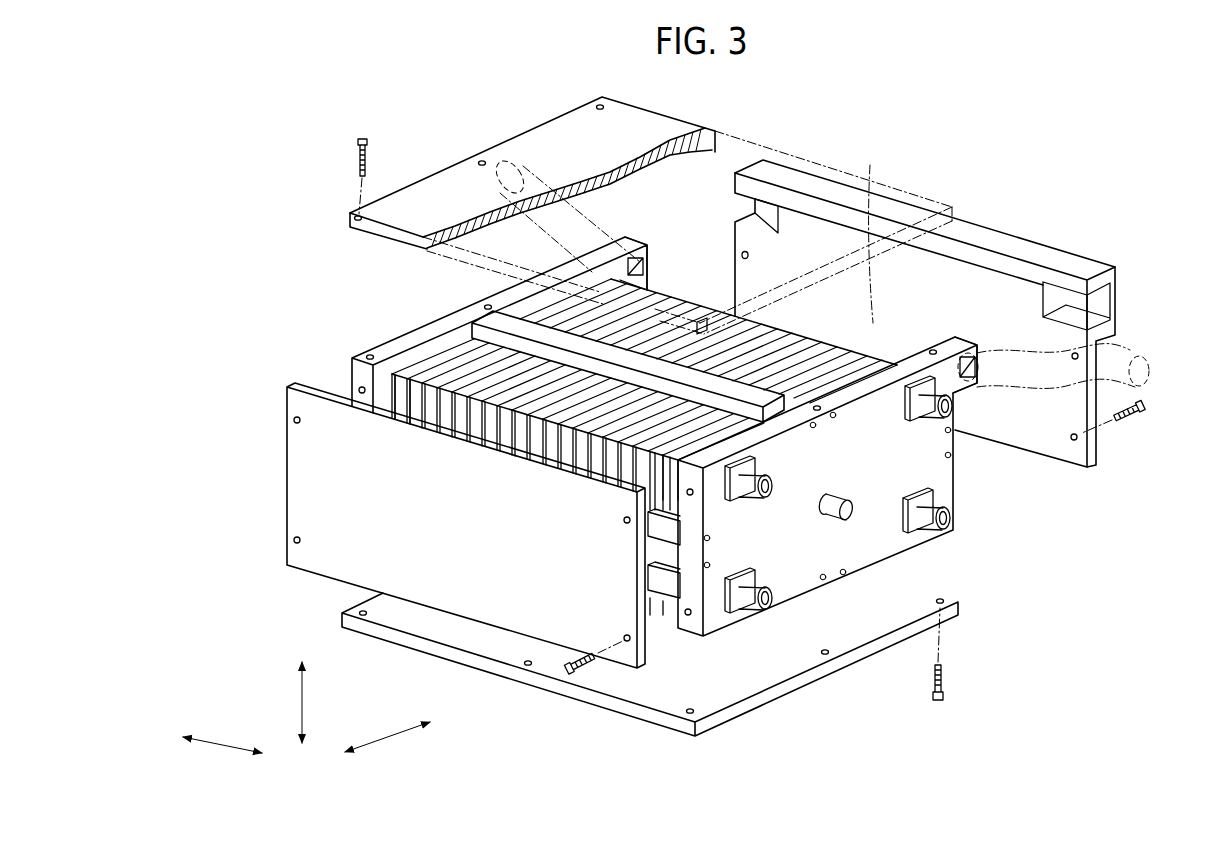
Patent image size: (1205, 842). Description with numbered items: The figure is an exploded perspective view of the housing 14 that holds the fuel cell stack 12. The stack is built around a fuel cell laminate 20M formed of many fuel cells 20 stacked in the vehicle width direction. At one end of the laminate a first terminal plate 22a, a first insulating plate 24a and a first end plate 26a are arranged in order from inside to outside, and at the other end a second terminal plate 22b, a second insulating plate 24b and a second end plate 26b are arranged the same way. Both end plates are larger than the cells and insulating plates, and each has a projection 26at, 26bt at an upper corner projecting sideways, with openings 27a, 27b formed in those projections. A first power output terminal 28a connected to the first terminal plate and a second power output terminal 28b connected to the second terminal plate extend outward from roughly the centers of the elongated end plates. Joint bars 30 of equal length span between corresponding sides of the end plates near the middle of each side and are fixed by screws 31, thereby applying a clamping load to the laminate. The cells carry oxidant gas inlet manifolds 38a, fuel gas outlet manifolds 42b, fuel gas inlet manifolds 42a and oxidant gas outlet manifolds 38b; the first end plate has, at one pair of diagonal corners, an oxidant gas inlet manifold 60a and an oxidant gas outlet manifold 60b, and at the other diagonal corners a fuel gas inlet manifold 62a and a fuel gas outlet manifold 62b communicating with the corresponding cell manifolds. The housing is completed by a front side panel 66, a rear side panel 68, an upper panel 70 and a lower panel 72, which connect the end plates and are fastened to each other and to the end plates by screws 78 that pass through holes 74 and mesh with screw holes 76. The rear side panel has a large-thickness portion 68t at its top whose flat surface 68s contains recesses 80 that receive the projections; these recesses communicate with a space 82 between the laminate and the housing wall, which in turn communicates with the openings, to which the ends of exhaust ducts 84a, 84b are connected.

The fuel cell stack 12 is at (664, 417).
The housing 14 is at (651, 208).
The upper panel 70 is at (651, 208).
The fuel cells 20 is at (634, 447).
The fuel cell laminate 20M is at (515, 437).
The first terminal plate 22a is at (611, 484).
The second terminal plate 22b is at (420, 443).
The first insulating plate 24a is at (619, 503).
The second insulating plate 24b is at (388, 428).
The first end plate 26a is at (843, 472).
The second end plate 26b is at (509, 460).
The projection 26at is at (971, 340).
The projection 26bt is at (668, 262).
The opening 27a is at (976, 391).
The opening 27b is at (663, 277).
The first power output terminal 28a is at (847, 526).
The second power output terminal 28b is at (602, 351).
The joint bars 30 is at (701, 499).
The screws 31 is at (850, 519).
The oxidant gas inlet manifold 60a is at (775, 499).
The oxidant gas inlet manifolds 38a is at (765, 492).
The oxidant gas outlet manifold 60b is at (950, 535).
The oxidant gas outlet manifolds 38b is at (928, 530).
The fuel gas inlet manifold 62a is at (908, 422).
The fuel gas inlet manifolds 42a is at (927, 424).
The fuel gas outlet manifold 62b is at (770, 612).
The fuel gas outlet manifolds 42b is at (766, 608).
The front side panel 66 is at (466, 525).
The rear side panel 68 is at (957, 334).
The flat surface 68s is at (925, 313).
The large-thickness portion 68t is at (1133, 364).
The lower panel 72 is at (650, 664).
The holes 74 is at (700, 403).
The screw holes 76 is at (499, 495).
The screws 78 is at (732, 435).
The recesses 80 is at (930, 264).
The space 82 is at (869, 231).
The exhaust duct 84a is at (1060, 347).
The exhaust duct 84b is at (570, 214).